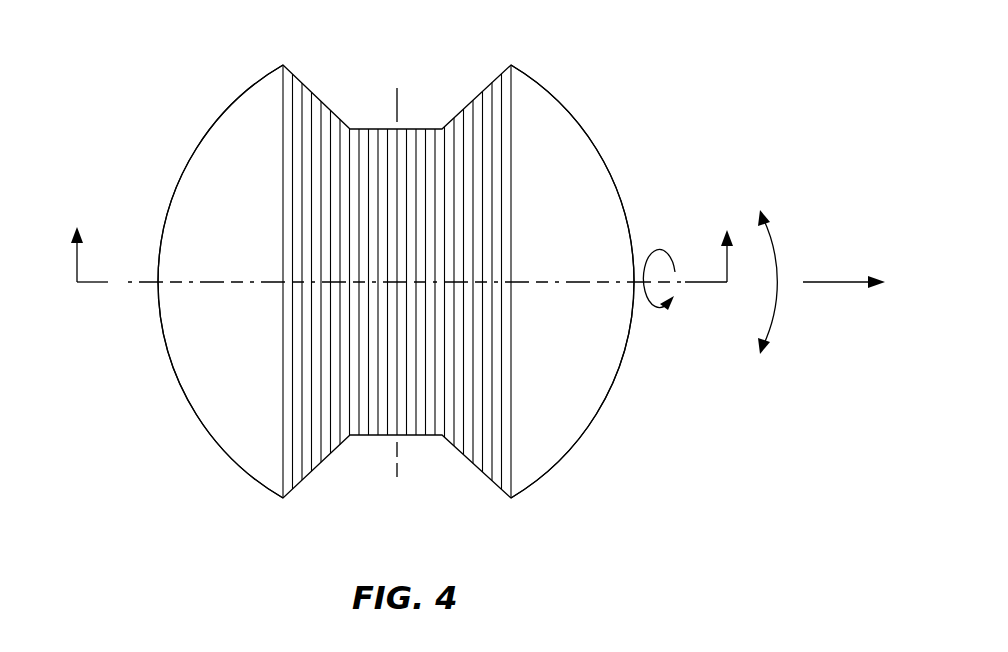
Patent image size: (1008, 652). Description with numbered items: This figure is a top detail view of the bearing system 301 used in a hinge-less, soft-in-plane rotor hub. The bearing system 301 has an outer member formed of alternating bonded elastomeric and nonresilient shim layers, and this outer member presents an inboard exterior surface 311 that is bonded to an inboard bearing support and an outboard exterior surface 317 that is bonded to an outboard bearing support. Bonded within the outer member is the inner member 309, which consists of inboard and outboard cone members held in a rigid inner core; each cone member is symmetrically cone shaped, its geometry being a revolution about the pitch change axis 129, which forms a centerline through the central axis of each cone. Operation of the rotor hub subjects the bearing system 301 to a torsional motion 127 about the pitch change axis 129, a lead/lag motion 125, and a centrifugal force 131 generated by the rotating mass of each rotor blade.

The bearing system 301 is at (208, 62).
The inner member 309 is at (371, 456).
The inboard exterior surface 311 is at (192, 227).
The outboard exterior surface 317 is at (577, 168).
The pitch change axis 129 is at (178, 280).
The torsional motion 127 is at (658, 253).
The lead/lag motion 125 is at (783, 255).
The centrifugal force 131 is at (817, 283).